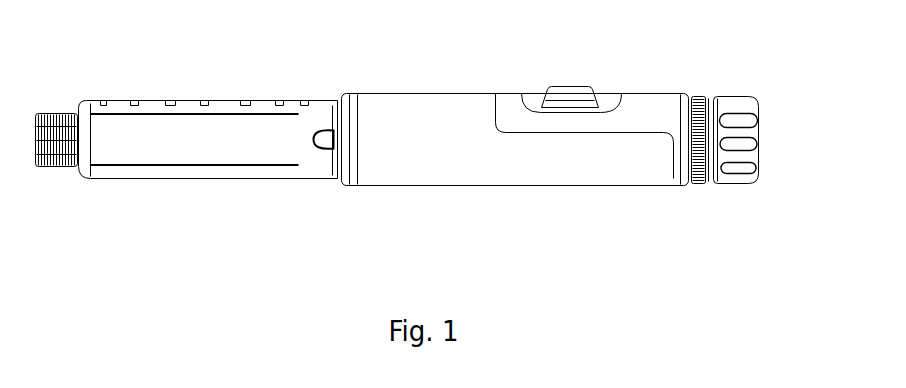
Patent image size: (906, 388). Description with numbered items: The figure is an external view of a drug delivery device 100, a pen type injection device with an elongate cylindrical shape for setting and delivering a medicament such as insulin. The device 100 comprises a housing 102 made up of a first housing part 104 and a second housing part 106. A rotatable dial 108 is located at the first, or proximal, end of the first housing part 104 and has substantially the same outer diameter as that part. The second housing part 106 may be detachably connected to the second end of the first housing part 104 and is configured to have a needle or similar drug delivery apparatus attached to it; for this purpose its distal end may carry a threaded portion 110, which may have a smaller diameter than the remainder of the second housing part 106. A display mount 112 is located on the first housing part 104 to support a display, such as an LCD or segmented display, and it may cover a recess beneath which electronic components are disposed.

The drug delivery device 100 is at (562, 249).
The housing 102 is at (358, 93).
The first housing part 104 is at (643, 110).
The second housing part 106 is at (230, 148).
The rotatable dial 108 is at (733, 157).
The threaded portion 110 is at (60, 152).
The display mount 112 is at (570, 100).